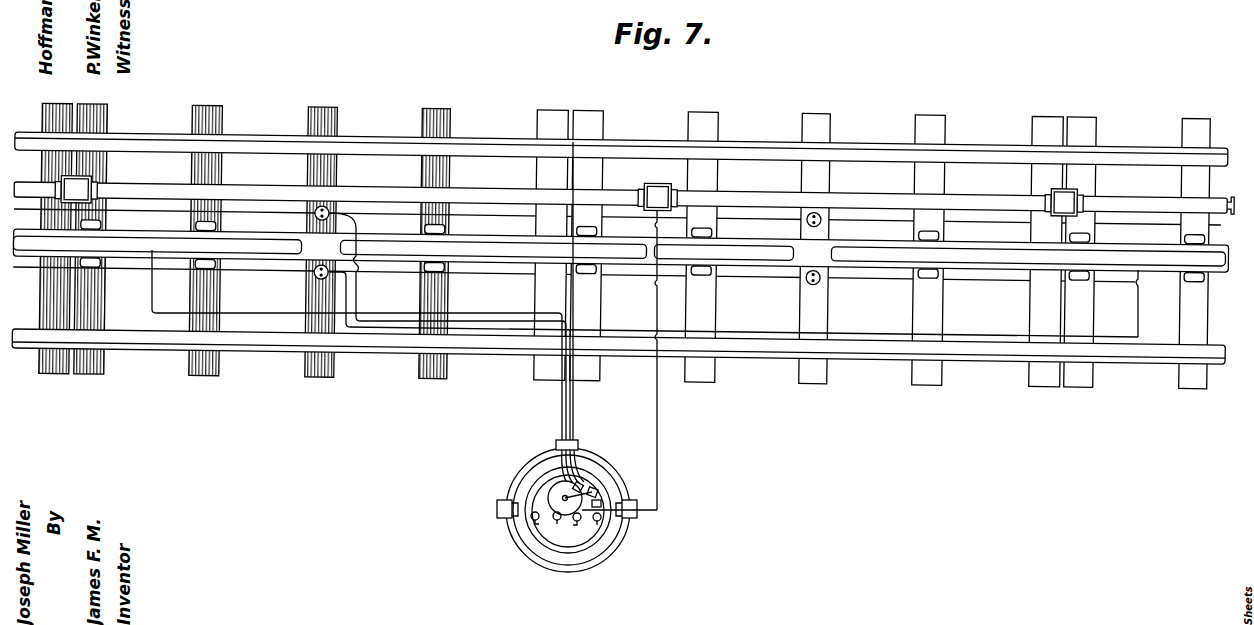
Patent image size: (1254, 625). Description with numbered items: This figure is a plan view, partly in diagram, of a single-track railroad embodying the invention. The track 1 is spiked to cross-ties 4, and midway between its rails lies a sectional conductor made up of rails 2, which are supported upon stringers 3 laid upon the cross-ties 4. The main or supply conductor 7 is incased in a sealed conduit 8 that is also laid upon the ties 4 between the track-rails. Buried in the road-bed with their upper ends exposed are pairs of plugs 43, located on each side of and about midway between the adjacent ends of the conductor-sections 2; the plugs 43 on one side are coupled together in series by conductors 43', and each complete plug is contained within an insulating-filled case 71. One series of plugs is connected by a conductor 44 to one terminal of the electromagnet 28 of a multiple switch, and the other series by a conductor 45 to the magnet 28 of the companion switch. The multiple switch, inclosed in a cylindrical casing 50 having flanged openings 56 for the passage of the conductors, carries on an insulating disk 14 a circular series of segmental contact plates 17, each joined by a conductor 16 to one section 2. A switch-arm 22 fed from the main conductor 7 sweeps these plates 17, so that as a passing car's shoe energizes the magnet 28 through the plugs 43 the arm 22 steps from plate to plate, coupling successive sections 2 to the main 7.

The track 1 is at (652, 144).
The sectional conductor rails 2 is at (148, 245).
The stringers 3 is at (133, 230).
The cross-ties 4 is at (224, 112).
The main conductor 7 is at (1228, 195).
The sealed conduit 8 is at (1141, 201).
The disk 14 is at (545, 495).
The conductors 16 is at (251, 313).
The contact plates 17 is at (590, 496).
The switch-arm 22 is at (575, 492).
The electromagnet 28 is at (558, 521).
The plugs 43 is at (593, 236).
The conductors 43' is at (617, 235).
The conductor 44 is at (478, 320).
The conductor 45 is at (348, 302).
The casing 50 is at (531, 552).
The flanged openings 56 is at (497, 511).
The case 71 is at (671, 360).